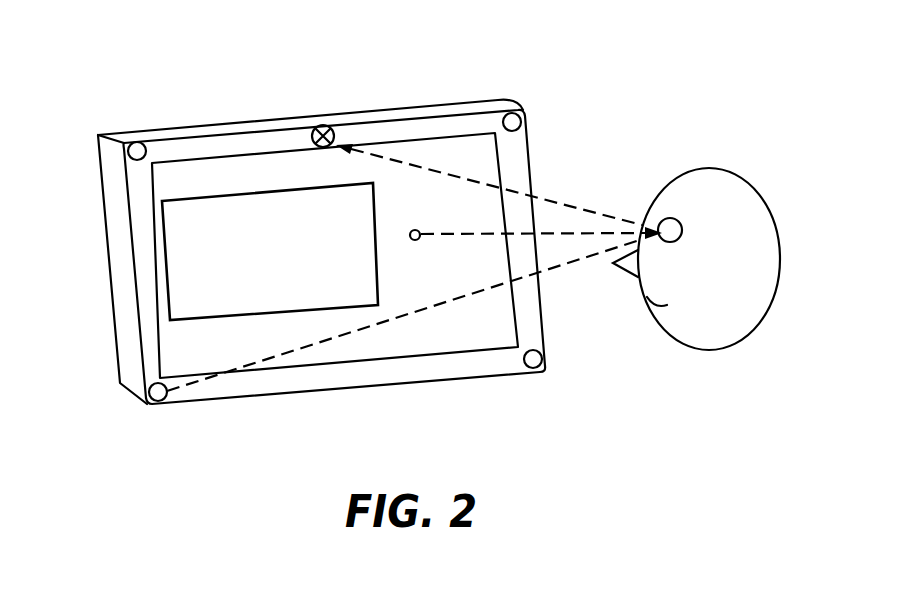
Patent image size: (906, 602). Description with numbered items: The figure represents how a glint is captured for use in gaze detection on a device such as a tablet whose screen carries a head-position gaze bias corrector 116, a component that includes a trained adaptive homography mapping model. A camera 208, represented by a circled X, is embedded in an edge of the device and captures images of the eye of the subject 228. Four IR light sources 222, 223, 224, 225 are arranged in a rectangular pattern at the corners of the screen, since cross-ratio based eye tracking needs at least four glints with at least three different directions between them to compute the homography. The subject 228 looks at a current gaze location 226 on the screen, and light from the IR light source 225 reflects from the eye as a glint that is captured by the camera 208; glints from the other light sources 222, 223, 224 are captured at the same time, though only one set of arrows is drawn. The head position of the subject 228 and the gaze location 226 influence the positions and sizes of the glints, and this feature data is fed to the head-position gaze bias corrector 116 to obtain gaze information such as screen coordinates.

The head-position gaze bias corrector 116 is at (333, 296).
The camera 208 is at (326, 125).
The light source 222 is at (142, 145).
The light source 223 is at (518, 116).
The light source 224 is at (538, 367).
The IR light source 225 is at (122, 383).
The current gaze location 226 is at (414, 240).
The subject 228 is at (730, 180).